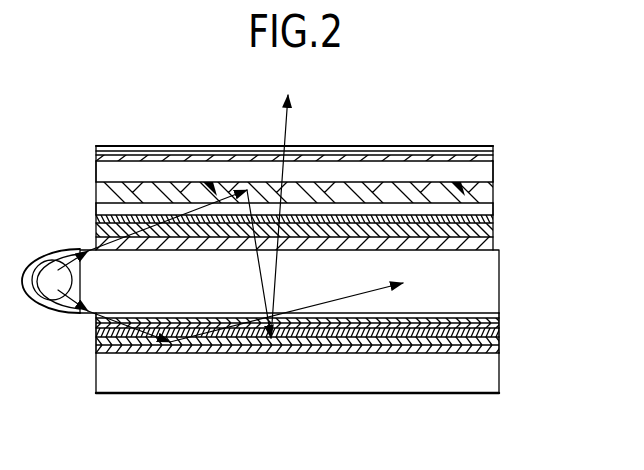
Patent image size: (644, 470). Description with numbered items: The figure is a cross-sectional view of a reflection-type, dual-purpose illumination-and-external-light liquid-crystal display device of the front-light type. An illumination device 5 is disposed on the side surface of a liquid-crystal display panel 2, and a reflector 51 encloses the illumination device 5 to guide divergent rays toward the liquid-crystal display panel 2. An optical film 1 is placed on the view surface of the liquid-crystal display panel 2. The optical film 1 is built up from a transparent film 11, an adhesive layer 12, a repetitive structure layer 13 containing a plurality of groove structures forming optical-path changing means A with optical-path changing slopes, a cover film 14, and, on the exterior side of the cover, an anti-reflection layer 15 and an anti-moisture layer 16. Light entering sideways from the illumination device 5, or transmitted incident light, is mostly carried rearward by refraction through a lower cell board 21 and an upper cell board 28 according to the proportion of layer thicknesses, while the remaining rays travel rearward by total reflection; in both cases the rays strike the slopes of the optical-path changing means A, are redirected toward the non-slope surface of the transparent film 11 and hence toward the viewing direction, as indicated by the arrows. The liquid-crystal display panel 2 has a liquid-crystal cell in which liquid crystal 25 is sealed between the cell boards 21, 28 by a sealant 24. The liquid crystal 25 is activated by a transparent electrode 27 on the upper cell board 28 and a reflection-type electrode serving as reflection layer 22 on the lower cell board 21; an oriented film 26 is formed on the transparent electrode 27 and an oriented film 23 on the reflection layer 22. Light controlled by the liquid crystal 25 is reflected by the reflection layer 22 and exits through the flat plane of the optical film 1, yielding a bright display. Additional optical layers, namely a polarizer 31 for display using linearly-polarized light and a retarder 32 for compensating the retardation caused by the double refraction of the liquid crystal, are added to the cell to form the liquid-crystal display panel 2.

The optical film 1 is at (353, 185).
The liquid-crystal display panel 2 is at (343, 350).
The illumination device 5 is at (50, 307).
The reflector 51 is at (52, 256).
The transparent film 11 is at (483, 210).
The adhesive layer 12 is at (483, 222).
The repetitive structure layer 13 is at (479, 195).
The cover film 14 is at (484, 173).
The anti-reflection layer 15 is at (484, 157).
The anti-moisture layer 16 is at (490, 147).
The polarizer 31 is at (484, 228).
The retarder 32 is at (326, 247).
The upper cell board 28 is at (483, 282).
The transparent electrode 27 is at (490, 317).
The oriented film 26 is at (484, 323).
The liquid crystal 25 is at (338, 383).
The sealant 24 is at (484, 333).
The oriented film 23 is at (484, 346).
The reflection layer 22 is at (486, 375).
The lower cell board 21 is at (321, 398).
The optical-path changing means A is at (338, 186).